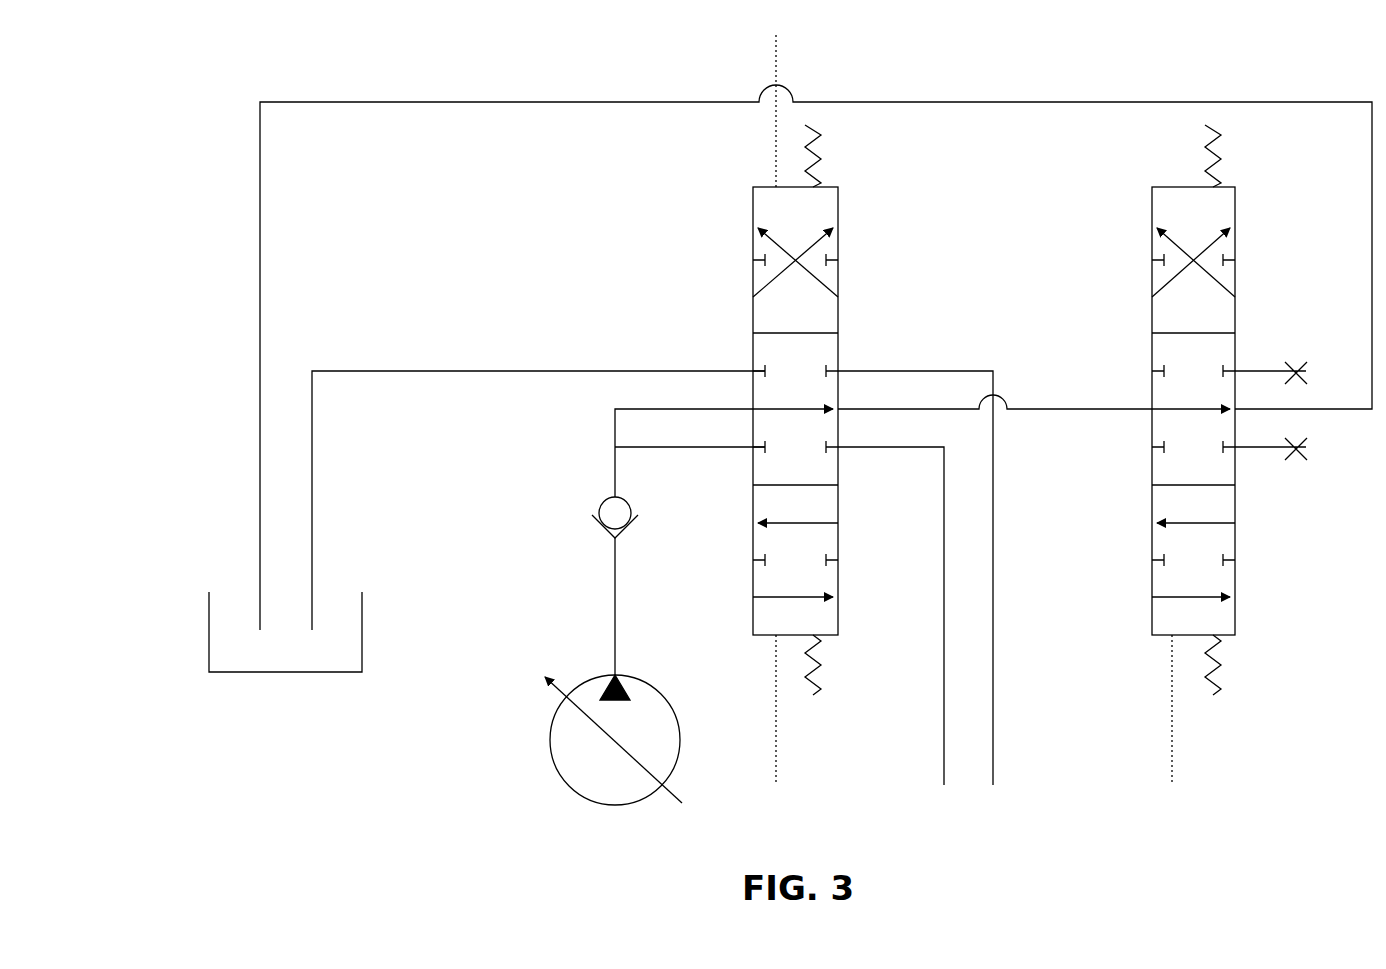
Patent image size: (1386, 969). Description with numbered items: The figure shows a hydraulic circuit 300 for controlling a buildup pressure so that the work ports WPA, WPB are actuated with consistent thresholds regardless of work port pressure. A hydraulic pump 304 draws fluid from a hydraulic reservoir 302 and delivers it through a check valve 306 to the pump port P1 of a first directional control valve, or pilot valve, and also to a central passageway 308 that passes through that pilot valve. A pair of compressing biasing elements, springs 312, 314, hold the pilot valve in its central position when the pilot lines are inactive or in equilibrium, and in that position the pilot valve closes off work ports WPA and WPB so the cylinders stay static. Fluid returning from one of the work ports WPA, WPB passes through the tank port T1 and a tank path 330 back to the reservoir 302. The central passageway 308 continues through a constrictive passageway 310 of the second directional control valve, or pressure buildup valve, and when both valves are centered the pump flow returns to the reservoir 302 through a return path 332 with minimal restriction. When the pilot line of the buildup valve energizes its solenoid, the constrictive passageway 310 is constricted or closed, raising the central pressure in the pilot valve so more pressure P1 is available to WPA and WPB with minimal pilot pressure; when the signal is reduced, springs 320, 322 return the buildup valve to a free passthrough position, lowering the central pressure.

The hydraulic circuit 300 is at (235, 100).
The hydraulic reservoir 302 is at (210, 630).
The hydraulic pump 304 is at (585, 672).
The check valve 306 is at (597, 505).
The central passageway 308 is at (753, 407).
The constrictive passageway 310 is at (1148, 407).
The compressing biasing element 312 is at (815, 688).
The compressing biasing element 314 is at (822, 175).
The spring 320 is at (1222, 162).
The spring 322 is at (1223, 687).
The tank path 330 is at (465, 370).
The return path 332 is at (259, 257).
The tank port T1 is at (753, 370).
The pump port P1 is at (753, 448).
The work port WPA is at (891, 619).
The work port WPB is at (951, 581).